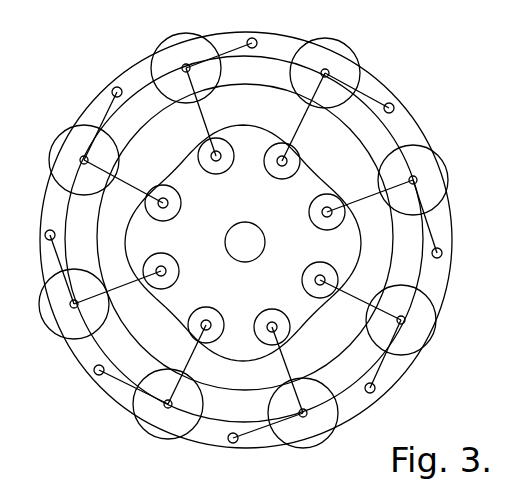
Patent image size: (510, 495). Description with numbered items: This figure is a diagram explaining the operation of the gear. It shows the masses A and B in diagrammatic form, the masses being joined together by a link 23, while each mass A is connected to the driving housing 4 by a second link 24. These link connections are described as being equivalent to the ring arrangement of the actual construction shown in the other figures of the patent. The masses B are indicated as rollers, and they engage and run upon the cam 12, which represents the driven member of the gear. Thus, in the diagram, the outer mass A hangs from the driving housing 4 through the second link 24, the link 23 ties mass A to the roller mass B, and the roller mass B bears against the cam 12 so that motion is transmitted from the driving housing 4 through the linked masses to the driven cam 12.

The mass A is at (335, 45).
The mass B is at (282, 179).
The driving housing 4 is at (396, 111).
The cam 12 is at (314, 170).
The link 23 is at (296, 137).
The second link 24 is at (371, 87).